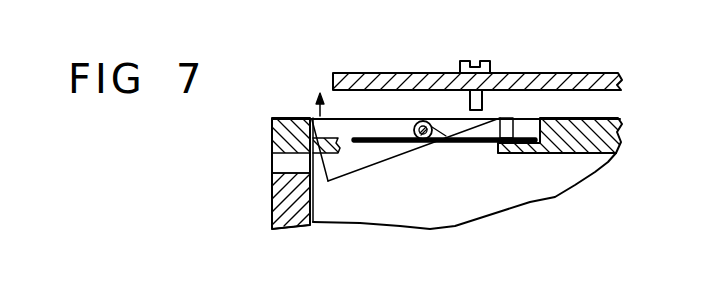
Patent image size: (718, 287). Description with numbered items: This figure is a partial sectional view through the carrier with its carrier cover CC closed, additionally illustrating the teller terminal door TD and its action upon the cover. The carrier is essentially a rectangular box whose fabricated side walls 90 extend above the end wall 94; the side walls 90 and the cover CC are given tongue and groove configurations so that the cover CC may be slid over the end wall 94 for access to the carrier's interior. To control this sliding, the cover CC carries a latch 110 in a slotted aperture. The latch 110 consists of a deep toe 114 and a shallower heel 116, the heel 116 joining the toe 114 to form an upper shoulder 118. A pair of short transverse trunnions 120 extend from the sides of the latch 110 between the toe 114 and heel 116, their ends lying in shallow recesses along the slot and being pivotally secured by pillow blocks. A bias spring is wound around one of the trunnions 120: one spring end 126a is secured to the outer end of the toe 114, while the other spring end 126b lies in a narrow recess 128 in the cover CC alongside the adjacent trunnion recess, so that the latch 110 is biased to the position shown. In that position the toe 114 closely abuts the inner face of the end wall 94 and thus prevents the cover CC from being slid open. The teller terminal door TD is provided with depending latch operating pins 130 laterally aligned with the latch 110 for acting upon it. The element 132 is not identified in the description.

The teller terminal door TD is at (366, 72).
The carrier cover CC is at (284, 118).
The side walls 90 is at (333, 211).
The end wall 94 is at (273, 207).
The latch 110 is at (394, 167).
The toe 114 is at (344, 168).
The heel 116 is at (471, 140).
The upper shoulder 118 is at (452, 135).
The trunnions 120 is at (425, 141).
The spring end 126a is at (352, 137).
The spring end 126b is at (524, 153).
The narrow recess 128 is at (531, 127).
The latch operating pins 130 is at (483, 102).
The opening 132 is at (276, 168).